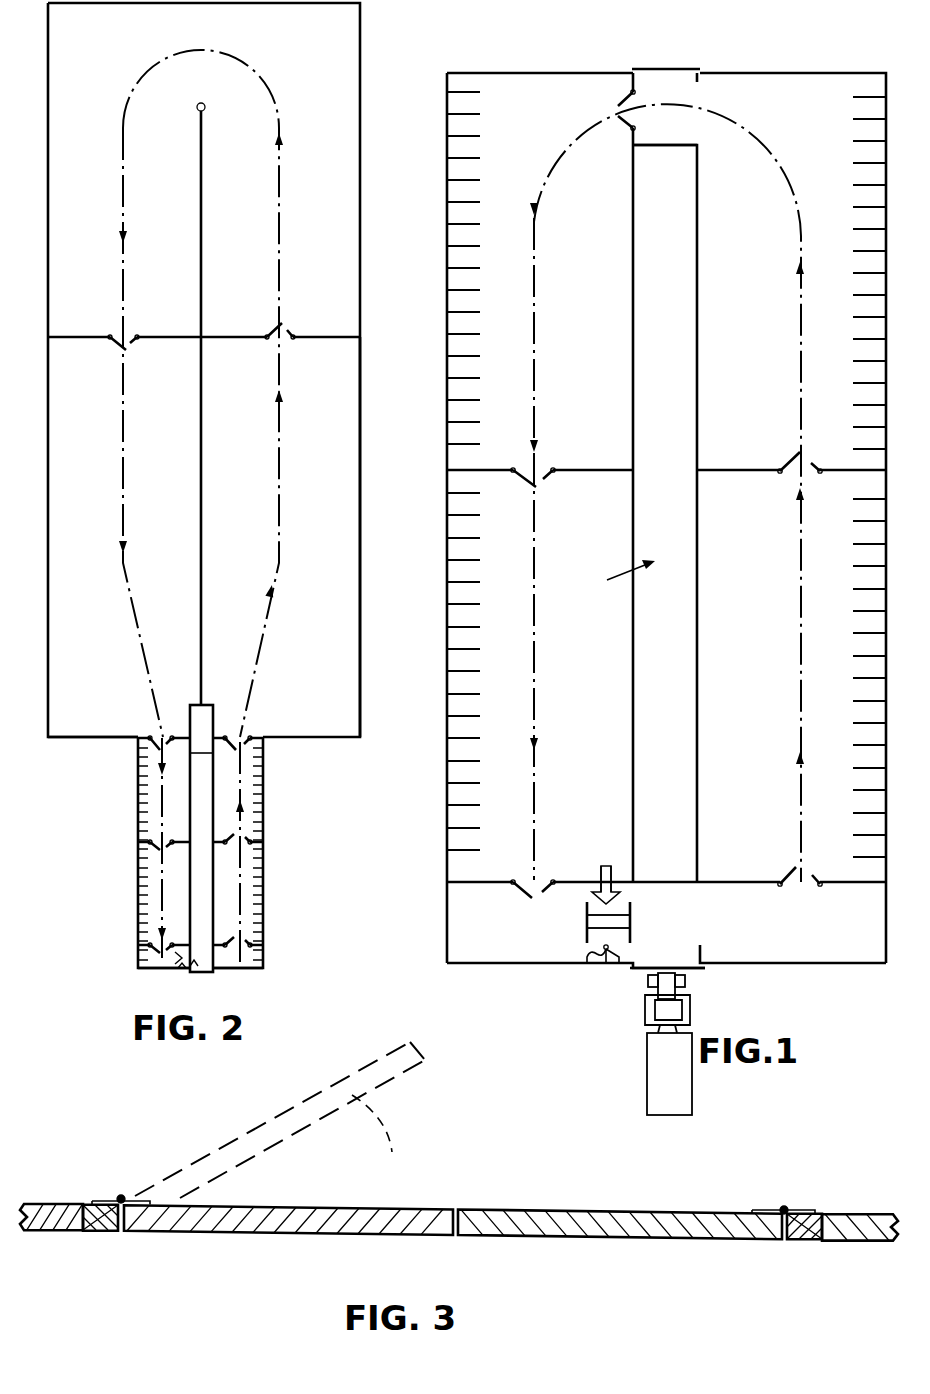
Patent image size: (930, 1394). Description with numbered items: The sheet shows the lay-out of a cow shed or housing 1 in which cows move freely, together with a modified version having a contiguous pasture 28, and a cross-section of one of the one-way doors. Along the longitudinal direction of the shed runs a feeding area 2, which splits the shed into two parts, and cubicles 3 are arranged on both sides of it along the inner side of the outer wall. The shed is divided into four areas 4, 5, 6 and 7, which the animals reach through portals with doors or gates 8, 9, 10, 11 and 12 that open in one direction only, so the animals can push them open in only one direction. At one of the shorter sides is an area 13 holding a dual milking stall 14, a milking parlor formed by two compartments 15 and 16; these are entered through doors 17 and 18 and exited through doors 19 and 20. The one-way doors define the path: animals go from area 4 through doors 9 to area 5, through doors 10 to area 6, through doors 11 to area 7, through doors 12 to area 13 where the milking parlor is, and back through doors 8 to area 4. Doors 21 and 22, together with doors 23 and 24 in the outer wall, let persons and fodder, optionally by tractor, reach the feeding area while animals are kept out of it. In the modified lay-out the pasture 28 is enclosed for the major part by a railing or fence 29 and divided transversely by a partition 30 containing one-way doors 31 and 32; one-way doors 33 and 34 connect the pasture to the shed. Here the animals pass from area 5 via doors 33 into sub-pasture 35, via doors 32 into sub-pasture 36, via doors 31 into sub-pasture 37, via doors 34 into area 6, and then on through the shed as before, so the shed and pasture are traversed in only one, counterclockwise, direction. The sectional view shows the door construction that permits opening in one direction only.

In FIG. 1, the housing 1 is at (818, 64).
In FIG. 2, the housing 1 is at (124, 836).
In FIG. 1, the feeding area 2 is at (680, 278).
In FIG. 2, the feeding area 2 is at (198, 782).
In FIG. 1, the cubicles 3 is at (866, 170).
In FIG. 2, the cubicles 3 is at (263, 786).
In FIG. 1, the area 4 is at (718, 778).
In FIG. 2, the area 4 is at (258, 910).
In FIG. 1, the area 5 is at (787, 133).
In FIG. 2, the area 5 is at (262, 803).
In FIG. 1, the area 6 is at (528, 88).
In FIG. 2, the area 6 is at (150, 804).
In FIG. 1, the area 7 is at (617, 611).
In FIG. 2, the area 7 is at (150, 914).
In FIG. 1, the doors 8 is at (796, 870).
In FIG. 2, the doors 8 is at (240, 938).
In FIG. 3, the doors 8 is at (393, 1206).
In FIG. 1, the doors 9 is at (790, 460).
In FIG. 2, the doors 9 is at (238, 856).
In FIG. 1, the doors 10 is at (630, 124).
In FIG. 1, the doors 11 is at (548, 478).
In FIG. 2, the doors 11 is at (164, 856).
In FIG. 1, the doors 12 is at (525, 896).
In FIG. 2, the doors 12 is at (150, 950).
In FIG. 1, the area 13 is at (805, 948).
In FIG. 2, the area 13 is at (248, 966).
In FIG. 1, the milking stall 14 is at (575, 923).
In FIG. 1, the compartment 15 is at (622, 912).
In FIG. 1, the compartment 16 is at (622, 938).
In FIG. 1, the door 17 is at (605, 888).
In FIG. 1, the door 18 is at (596, 960).
In FIG. 1, the door 19 is at (609, 866).
In FIG. 1, the door 20 is at (617, 969).
In FIG. 1, the door 21 is at (666, 880).
In FIG. 1, the door 22 is at (674, 150).
In FIG. 1, the door 23 is at (697, 972).
In FIG. 1, the door 24 is at (668, 70).
In FIG. 2, the pasture 28 is at (372, 96).
In FIG. 2, the enclosure means 29 is at (205, 252).
In FIG. 2, the partition 30 is at (174, 335).
In FIG. 2, the doors 31 is at (113, 344).
In FIG. 2, the doors 32 is at (290, 328).
In FIG. 2, the doors 33 is at (252, 740).
In FIG. 2, the doors 34 is at (157, 740).
In FIG. 2, the sub-pasture 35 is at (340, 626).
In FIG. 2, the sub-pasture 36 is at (334, 202).
In FIG. 2, the sub-pasture 37 is at (82, 724).